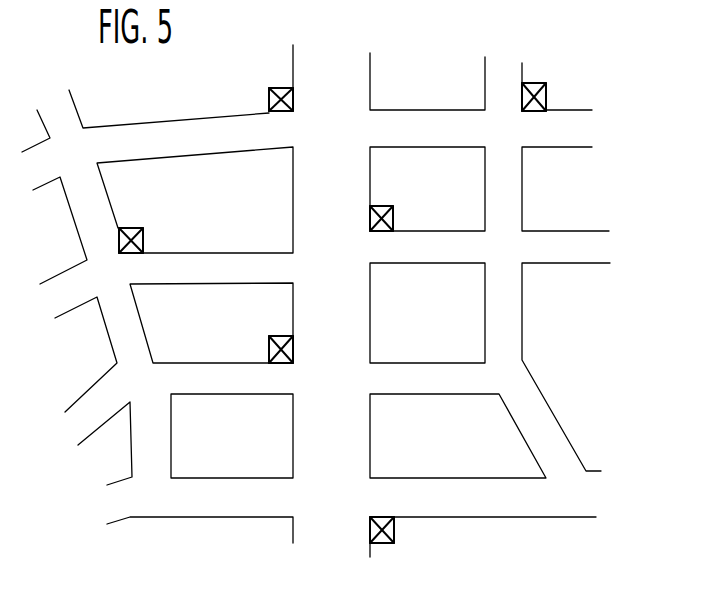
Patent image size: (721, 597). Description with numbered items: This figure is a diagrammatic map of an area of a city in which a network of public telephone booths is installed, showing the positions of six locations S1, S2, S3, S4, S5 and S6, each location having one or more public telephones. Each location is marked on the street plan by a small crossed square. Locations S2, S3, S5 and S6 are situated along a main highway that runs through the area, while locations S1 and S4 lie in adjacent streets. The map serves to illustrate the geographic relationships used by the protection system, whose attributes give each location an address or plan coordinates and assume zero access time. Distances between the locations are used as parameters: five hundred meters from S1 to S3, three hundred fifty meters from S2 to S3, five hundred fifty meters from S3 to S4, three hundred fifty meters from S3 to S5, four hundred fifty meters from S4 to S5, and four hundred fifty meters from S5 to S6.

The location S1 is at (546, 100).
The location S2 is at (269, 103).
The location S3 is at (393, 223).
The location S4 is at (143, 243).
The location S5 is at (269, 356).
The location S6 is at (394, 527).